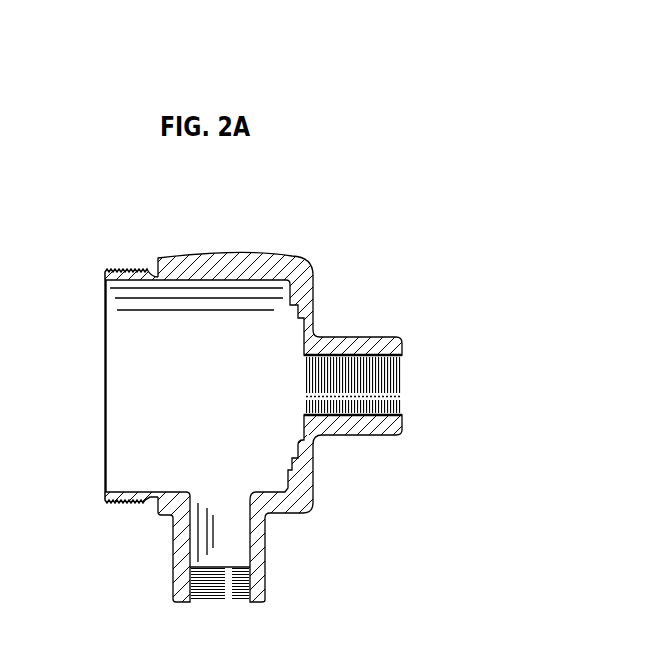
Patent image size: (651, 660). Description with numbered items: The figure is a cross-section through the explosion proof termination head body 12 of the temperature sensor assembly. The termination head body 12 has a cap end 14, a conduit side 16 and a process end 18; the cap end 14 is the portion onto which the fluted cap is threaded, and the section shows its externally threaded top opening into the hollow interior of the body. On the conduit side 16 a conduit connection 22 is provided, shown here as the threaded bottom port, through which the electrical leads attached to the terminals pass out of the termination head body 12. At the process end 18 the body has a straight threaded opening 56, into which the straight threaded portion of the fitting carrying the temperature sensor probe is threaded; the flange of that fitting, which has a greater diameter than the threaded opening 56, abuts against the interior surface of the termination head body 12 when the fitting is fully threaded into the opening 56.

The termination head body 12 is at (306, 266).
The cap end 14 is at (124, 254).
The conduit side 16 is at (295, 515).
The process end 18 is at (397, 337).
The conduit connection 22 is at (172, 562).
The straight threaded opening 56 is at (325, 364).